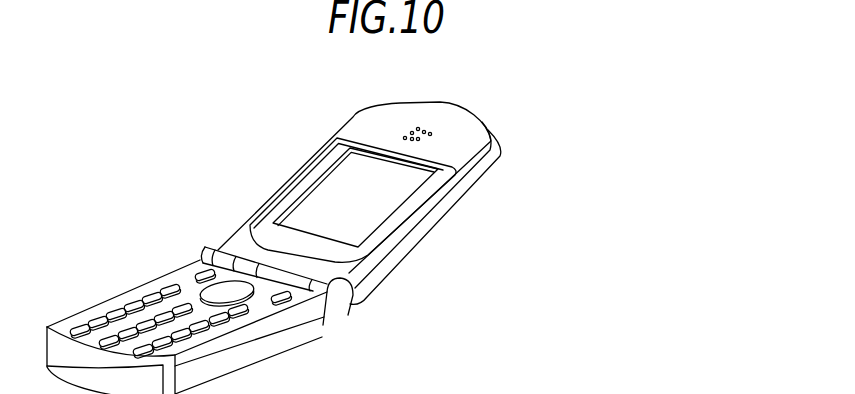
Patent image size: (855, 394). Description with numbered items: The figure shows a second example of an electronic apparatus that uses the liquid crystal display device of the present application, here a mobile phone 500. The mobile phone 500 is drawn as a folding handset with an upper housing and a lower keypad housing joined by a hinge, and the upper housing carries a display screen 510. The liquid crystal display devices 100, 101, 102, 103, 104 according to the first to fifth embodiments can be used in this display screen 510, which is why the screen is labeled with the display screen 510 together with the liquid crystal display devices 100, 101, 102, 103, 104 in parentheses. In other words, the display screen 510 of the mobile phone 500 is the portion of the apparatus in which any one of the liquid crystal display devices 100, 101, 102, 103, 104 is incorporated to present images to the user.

The mobile phone 500 is at (398, 229).
The display screen 510 is at (511, 199).
The liquid crystal display device 100 is at (355, 197).
The liquid crystal display device 101 is at (355, 197).
The liquid crystal display device 102 is at (355, 197).
The liquid crystal display device 103 is at (355, 197).
The liquid crystal display device 104 is at (352, 200).